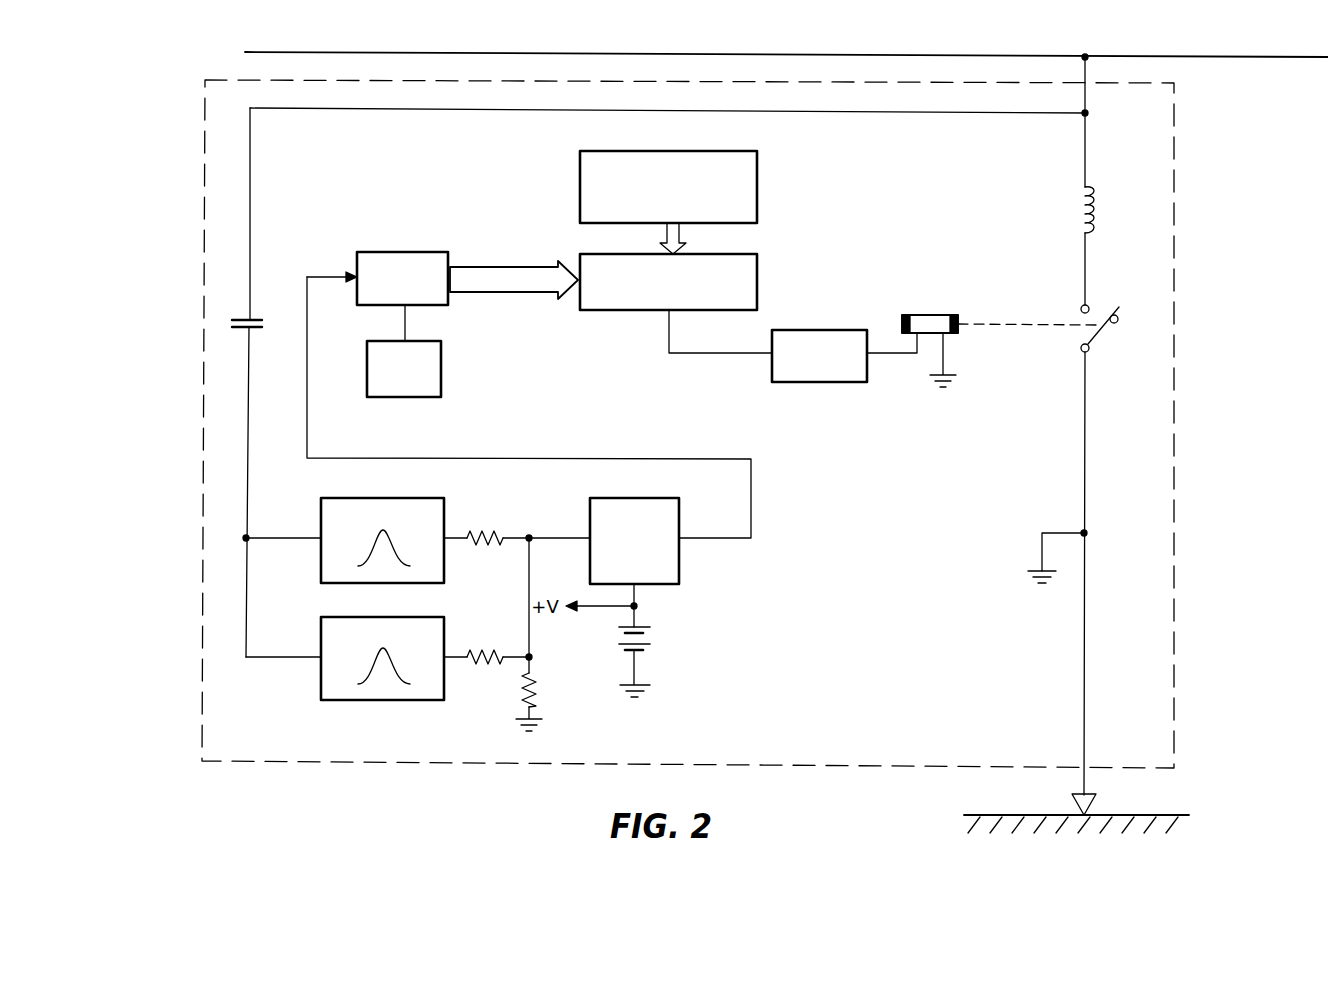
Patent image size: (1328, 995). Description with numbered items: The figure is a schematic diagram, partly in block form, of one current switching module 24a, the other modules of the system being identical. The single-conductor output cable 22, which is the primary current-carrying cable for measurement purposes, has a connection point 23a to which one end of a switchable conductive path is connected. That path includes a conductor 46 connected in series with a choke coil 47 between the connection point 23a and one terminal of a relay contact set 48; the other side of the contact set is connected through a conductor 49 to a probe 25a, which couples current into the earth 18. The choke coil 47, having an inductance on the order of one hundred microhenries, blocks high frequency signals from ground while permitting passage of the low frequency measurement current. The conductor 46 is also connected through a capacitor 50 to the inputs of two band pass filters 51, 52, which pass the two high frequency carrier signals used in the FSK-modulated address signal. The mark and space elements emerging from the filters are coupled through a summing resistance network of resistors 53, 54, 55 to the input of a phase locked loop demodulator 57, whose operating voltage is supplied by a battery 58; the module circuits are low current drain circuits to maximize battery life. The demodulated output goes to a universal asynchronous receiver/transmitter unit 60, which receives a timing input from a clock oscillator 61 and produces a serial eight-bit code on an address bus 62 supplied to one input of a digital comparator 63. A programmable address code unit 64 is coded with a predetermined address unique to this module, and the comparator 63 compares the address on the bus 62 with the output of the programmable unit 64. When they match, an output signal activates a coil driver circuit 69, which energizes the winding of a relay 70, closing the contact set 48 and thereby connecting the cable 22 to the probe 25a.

The earth 18 is at (1172, 815).
The output cable 22 is at (964, 56).
The connection point 23a is at (1085, 56).
The current switching module 24a is at (1175, 456).
The probe 25a is at (1093, 808).
The conductor 46 is at (1085, 136).
The choke coil 47 is at (1093, 202).
The relay contact set 48 is at (1101, 307).
The conductor 49 is at (1084, 467).
The capacitor 50 is at (253, 318).
The band pass filter 51 is at (444, 509).
The band pass filter 52 is at (440, 617).
The resistor 53 is at (480, 530).
The resistor 54 is at (500, 664).
The resistor 55 is at (537, 680).
The phase locked loop demodulator 57 is at (679, 557).
The battery 58 is at (651, 648).
The universal asynchronous receiver/transmitter unit 60 is at (390, 250).
The clock oscillator 61 is at (420, 398).
The address bus 62 is at (488, 266).
The digital comparator 63 is at (757, 284).
The programmable address code unit 64 is at (757, 188).
The coil driver circuit 69 is at (838, 330).
The relay 70 is at (938, 314).